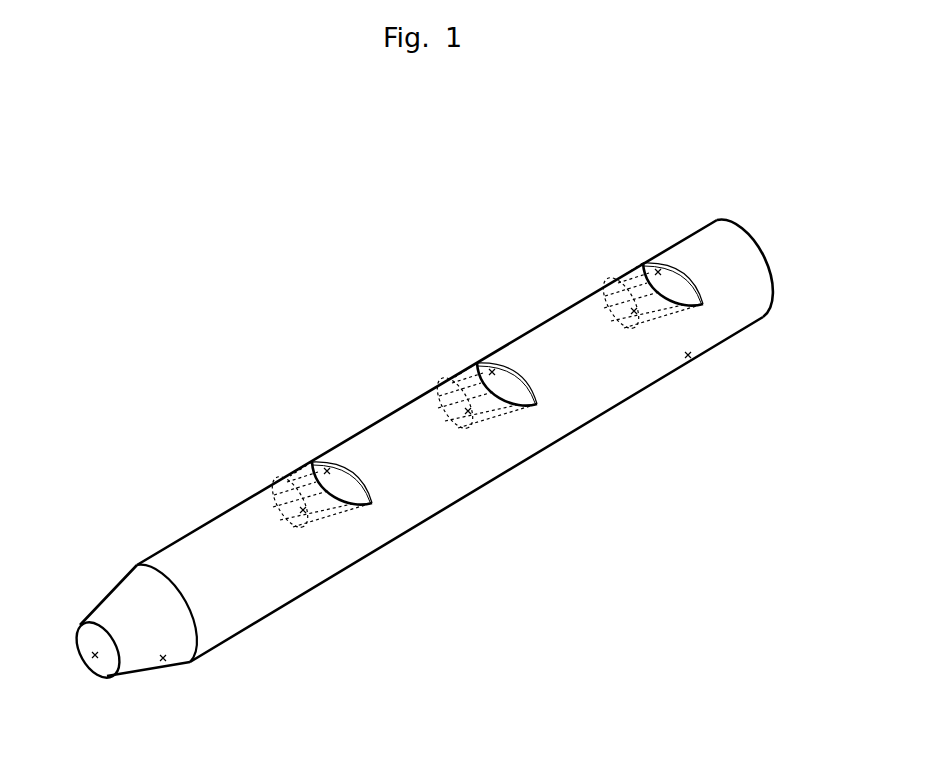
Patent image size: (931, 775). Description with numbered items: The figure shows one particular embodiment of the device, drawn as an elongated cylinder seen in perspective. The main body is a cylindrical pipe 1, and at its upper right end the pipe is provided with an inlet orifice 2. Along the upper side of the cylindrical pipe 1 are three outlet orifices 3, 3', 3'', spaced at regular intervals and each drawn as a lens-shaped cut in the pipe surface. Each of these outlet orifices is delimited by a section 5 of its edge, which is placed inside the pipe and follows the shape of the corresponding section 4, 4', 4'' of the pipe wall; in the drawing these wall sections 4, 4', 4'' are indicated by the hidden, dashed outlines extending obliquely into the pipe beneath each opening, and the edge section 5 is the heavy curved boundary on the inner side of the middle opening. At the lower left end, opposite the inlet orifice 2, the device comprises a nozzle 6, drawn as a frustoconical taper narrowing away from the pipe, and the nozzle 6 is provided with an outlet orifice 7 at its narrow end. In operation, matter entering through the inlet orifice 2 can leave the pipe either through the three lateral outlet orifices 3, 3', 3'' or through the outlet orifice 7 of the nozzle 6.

The cylindrical pipe 1 is at (690, 357).
The inlet orifice 2 is at (770, 243).
The outlet orifice 3 is at (653, 242).
The outlet orifice 3' is at (486, 340).
The outlet orifice 3'' is at (319, 441).
The section of the wall 4 is at (649, 368).
The section of the wall 4' is at (483, 466).
The section of the wall 4'' is at (318, 565).
The section of the edge 5 is at (522, 412).
The nozzle 6 is at (163, 662).
The outlet orifice 7 is at (93, 658).